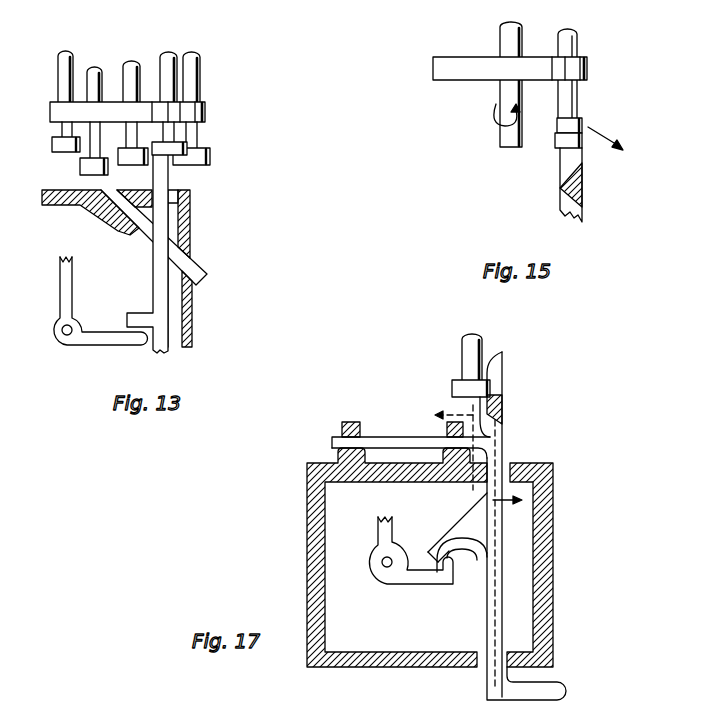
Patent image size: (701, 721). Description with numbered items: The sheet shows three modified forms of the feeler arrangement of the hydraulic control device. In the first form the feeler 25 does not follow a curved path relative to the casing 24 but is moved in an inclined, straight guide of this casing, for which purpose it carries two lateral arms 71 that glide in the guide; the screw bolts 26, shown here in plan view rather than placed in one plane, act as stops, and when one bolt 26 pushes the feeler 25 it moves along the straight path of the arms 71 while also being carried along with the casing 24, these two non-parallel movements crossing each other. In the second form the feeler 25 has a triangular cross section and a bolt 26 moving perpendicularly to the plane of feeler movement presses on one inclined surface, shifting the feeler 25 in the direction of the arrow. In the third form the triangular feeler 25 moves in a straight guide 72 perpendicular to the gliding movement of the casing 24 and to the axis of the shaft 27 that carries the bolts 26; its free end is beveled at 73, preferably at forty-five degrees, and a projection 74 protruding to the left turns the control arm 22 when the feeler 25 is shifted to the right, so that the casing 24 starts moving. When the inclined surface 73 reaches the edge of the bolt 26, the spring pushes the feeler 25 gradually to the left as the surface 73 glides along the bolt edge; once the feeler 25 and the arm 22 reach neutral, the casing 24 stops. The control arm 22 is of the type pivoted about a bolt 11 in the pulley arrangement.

In FIG. 17, the bolt 11 is at (384, 566).
In FIG. 13, the control arm 22 is at (108, 337).
In FIG. 17, the control arm 22 is at (440, 580).
In FIG. 13, the casing 24 is at (191, 202).
In FIG. 17, the casing 24 is at (410, 659).
In FIG. 13, the feeler 25 is at (157, 273).
In FIG. 15, the feeler 25 is at (583, 177).
In FIG. 17, the feeler 25 is at (493, 598).
In FIG. 13, the bolt 26 is at (206, 149).
In FIG. 15, the bolt 26 is at (555, 145).
In FIG. 17, the bolt 26 is at (455, 392).
In FIG. 15, the shaft 27 is at (503, 38).
In FIG. 13, the lateral arms 71 is at (203, 269).
In FIG. 17, the guide 72 is at (447, 427).
In FIG. 17, the beveled surface 73 is at (503, 372).
In FIG. 17, the projection 74 is at (447, 543).